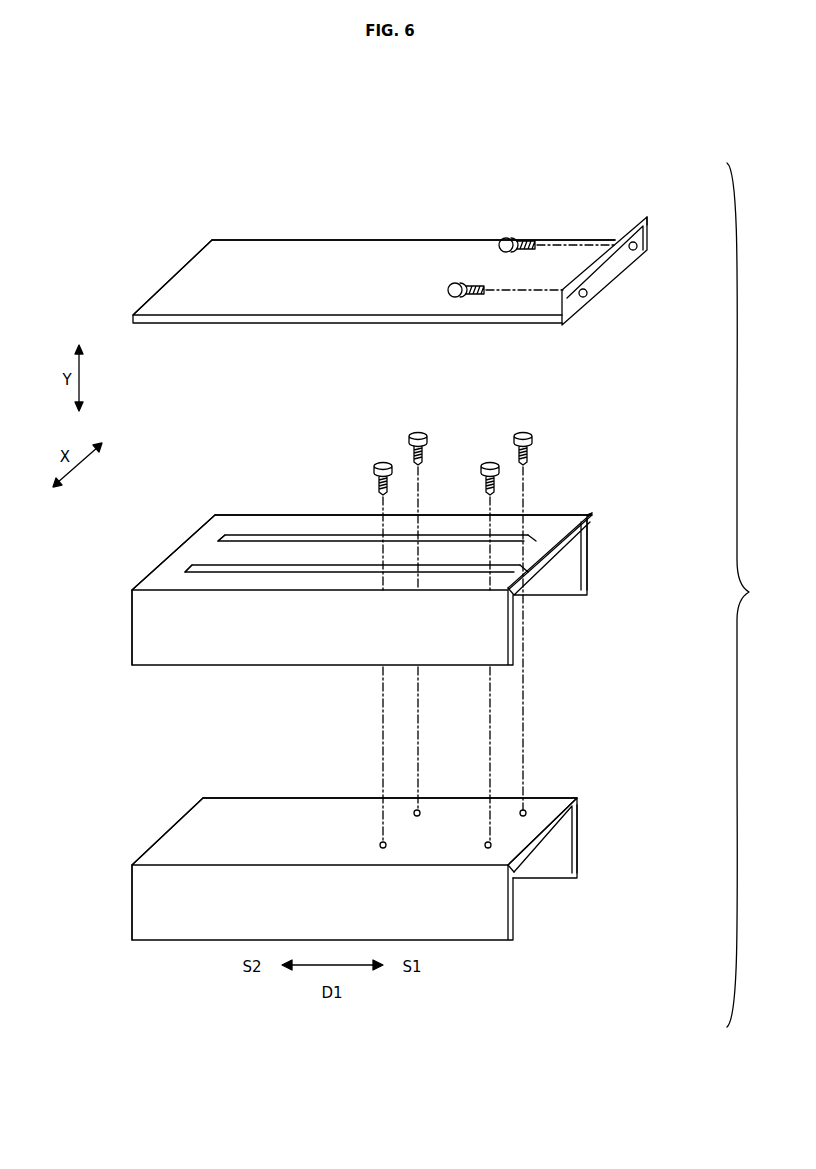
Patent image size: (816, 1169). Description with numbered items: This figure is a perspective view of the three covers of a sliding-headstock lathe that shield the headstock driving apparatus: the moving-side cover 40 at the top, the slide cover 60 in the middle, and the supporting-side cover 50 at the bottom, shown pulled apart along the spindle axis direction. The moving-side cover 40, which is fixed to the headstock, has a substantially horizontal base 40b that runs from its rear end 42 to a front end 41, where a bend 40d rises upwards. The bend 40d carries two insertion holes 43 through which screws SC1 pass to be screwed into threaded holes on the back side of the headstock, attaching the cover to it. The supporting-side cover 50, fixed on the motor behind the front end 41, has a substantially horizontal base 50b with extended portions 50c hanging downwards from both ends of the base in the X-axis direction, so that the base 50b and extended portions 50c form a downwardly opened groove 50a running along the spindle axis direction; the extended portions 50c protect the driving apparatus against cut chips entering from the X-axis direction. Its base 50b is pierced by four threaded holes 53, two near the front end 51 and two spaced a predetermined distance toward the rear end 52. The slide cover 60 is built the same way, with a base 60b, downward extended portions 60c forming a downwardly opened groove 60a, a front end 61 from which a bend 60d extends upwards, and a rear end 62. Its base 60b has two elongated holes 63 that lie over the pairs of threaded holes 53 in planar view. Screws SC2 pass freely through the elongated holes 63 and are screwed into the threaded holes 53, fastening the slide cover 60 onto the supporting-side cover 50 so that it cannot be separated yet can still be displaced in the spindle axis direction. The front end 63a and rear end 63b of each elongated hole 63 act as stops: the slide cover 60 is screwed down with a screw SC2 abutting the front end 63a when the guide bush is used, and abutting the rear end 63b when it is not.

The moving-side cover 40 is at (198, 250).
The base 40b is at (248, 250).
The bend 40d is at (648, 219).
The front end 41 is at (625, 277).
The inclined edge portion of first plate member 42 is at (185, 267).
The insertion hole 43 is at (637, 249).
The screw SC1 is at (455, 283).
The slide cover 60 is at (200, 528).
The groove 60a is at (513, 591).
The base 60b is at (250, 525).
The extended portion 60c is at (578, 572).
The bend 60d is at (593, 512).
The front end 61 is at (590, 539).
The rear end 62 is at (183, 545).
The elongated hole 63 is at (358, 540).
The front end of elongated hole 63a is at (543, 572).
The rear end of elongated hole 63b is at (195, 567).
The screw SC2 is at (384, 462).
The supporting-side cover 50 is at (198, 800).
The groove 50a is at (532, 852).
The base 50b is at (250, 812).
The extended portion 50c is at (580, 848).
The front end 51 is at (576, 818).
The rear end 52 is at (180, 818).
The threaded hole 53 is at (380, 842).